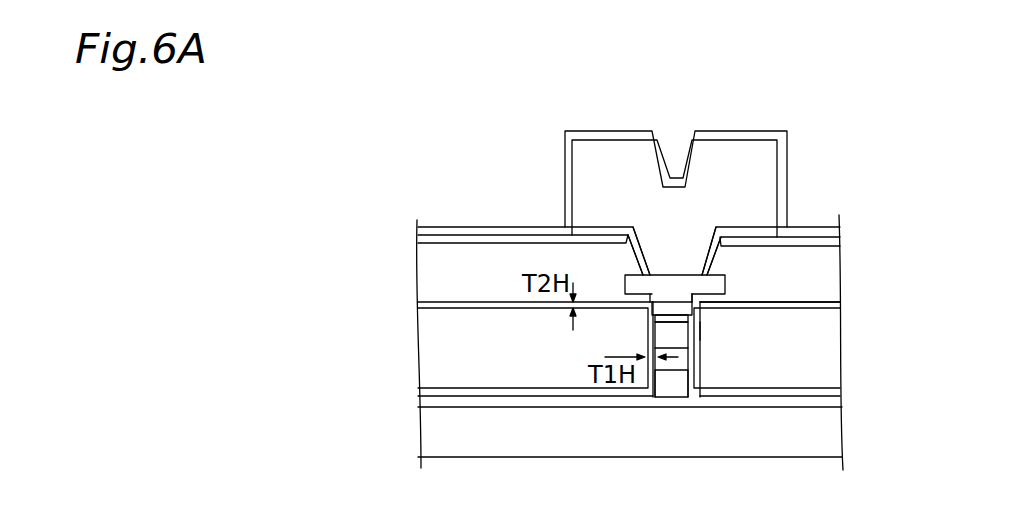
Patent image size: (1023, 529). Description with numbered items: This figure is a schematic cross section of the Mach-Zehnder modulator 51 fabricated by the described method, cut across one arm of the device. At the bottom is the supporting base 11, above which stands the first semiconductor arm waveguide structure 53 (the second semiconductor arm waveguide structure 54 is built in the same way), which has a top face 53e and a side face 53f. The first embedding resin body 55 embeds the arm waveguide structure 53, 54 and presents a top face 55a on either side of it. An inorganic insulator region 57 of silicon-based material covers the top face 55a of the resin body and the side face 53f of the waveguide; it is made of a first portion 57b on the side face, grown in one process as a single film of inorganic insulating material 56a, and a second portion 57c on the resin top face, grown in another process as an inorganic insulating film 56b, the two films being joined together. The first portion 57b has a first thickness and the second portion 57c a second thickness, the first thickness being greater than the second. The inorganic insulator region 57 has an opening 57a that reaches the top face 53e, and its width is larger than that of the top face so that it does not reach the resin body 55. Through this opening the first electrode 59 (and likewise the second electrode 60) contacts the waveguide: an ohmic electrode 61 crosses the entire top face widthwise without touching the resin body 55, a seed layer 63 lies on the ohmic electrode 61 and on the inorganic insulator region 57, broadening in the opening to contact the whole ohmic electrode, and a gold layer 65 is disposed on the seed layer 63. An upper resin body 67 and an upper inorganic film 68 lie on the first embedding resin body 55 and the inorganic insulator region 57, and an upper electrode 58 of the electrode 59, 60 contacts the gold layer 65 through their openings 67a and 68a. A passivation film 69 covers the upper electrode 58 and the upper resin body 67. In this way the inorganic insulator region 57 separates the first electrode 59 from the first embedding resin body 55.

The supporting base 11 is at (437, 432).
The Mach-Zehnder modulator 51 is at (818, 148).
The first semiconductor arm waveguide structure 53 is at (676, 423).
The second semiconductor arm waveguide structure 54 is at (671, 383).
The top face 53e is at (700, 292).
The side face 53f is at (710, 335).
The first embedding resin body 55 is at (523, 372).
The top face 55a is at (838, 300).
The single film of inorganic insulating material 56a is at (465, 388).
The inorganic insulating film 56b is at (445, 244).
The inorganic insulator region 57 is at (303, 240).
The opening 57a is at (662, 300).
The first portion 57b is at (647, 341).
The second portion 57c is at (598, 301).
The upper electrode 58 is at (650, 298).
The first electrode 59 is at (733, 78).
The second electrode 60 is at (657, 237).
The ohmic electrode 61 is at (640, 331).
The seed layer 63 is at (668, 301).
The gold layer 65 is at (698, 244).
The upper resin body 67 is at (487, 291).
The opening 67a is at (750, 173).
The upper inorganic film 68 is at (535, 235).
The opening 68a is at (704, 250).
The passivation film 69 is at (773, 131).